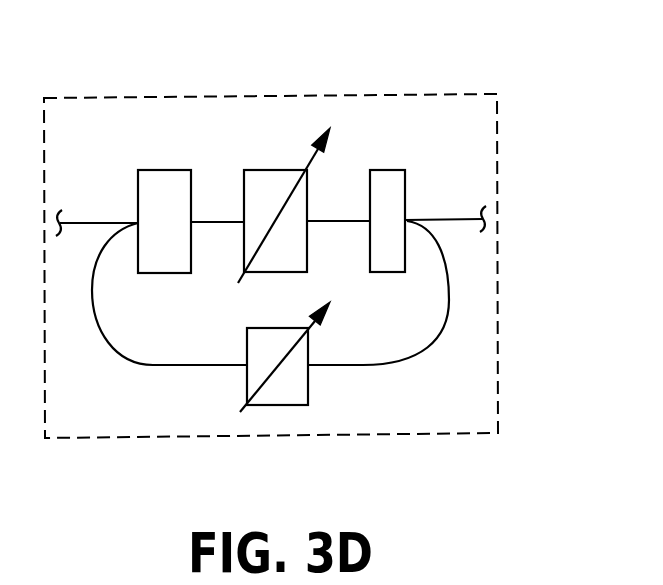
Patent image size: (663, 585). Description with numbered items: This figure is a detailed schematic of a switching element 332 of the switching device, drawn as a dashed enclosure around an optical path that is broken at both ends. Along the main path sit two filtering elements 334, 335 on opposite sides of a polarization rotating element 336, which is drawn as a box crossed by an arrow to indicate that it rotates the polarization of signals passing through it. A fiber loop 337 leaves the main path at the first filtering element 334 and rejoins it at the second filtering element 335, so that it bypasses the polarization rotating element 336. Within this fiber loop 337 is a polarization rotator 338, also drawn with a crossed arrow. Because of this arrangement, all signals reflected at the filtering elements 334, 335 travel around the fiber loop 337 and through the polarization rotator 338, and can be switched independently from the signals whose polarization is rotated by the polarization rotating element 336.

The switching element 332 is at (497, 170).
The filtering element 334 is at (170, 170).
The filtering element 335 is at (390, 170).
The polarization rotating element 336 is at (283, 170).
The fiber loop 337 is at (450, 310).
The polarization rotator 338 is at (285, 405).